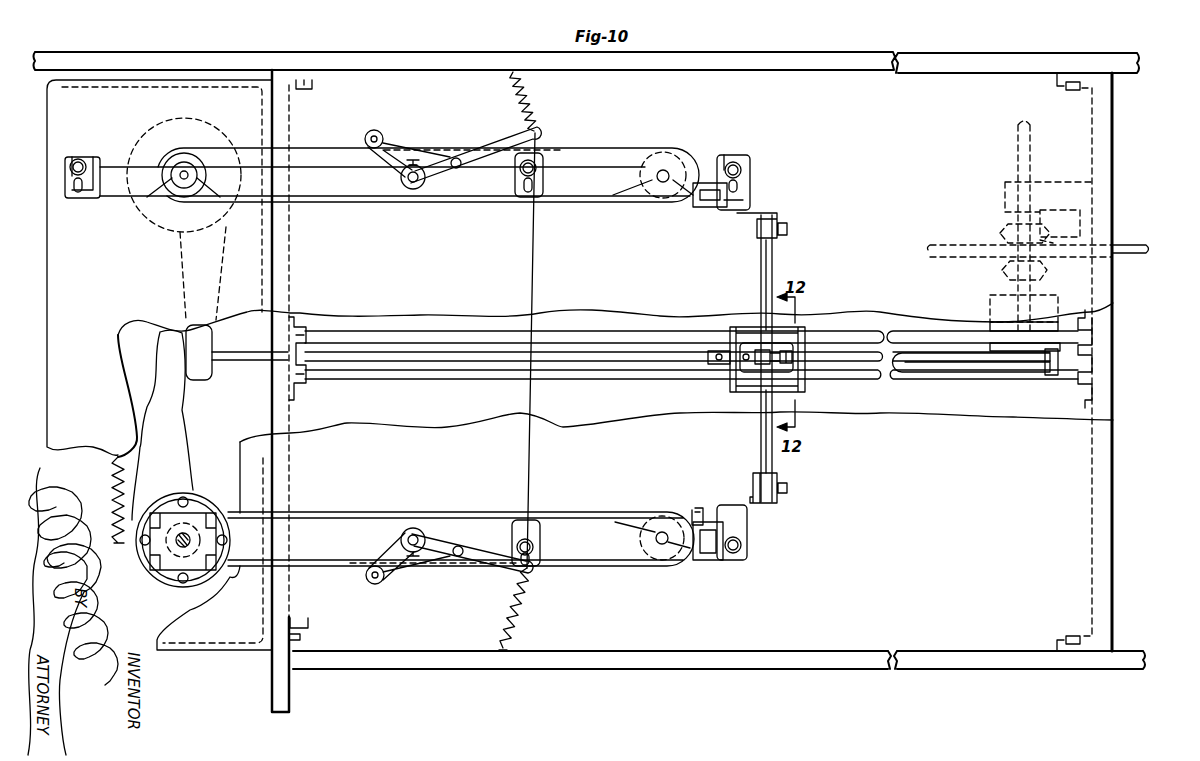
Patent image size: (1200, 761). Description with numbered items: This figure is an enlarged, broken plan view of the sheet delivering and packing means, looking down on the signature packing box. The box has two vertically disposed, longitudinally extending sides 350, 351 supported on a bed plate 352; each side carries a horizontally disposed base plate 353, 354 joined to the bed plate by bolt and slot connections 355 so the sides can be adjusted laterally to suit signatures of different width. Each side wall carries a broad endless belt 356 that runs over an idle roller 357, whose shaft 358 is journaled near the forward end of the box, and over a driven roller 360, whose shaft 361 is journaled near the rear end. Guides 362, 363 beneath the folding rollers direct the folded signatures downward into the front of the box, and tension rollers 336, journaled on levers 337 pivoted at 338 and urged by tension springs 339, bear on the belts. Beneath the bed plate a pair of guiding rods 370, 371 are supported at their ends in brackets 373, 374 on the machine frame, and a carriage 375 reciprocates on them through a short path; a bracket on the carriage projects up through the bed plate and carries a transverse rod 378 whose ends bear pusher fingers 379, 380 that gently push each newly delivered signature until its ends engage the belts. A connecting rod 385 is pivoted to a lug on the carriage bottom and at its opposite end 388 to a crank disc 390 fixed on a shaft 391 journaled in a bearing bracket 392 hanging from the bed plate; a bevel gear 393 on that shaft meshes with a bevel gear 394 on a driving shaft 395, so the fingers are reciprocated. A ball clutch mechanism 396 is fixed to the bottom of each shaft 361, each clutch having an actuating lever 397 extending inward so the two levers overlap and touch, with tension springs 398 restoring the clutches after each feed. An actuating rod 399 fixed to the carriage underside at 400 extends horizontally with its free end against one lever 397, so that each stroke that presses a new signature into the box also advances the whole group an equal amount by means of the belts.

The tension roller 336 is at (384, 136).
The lever 337 is at (392, 144).
The pivot 338 is at (406, 188).
The tension spring 339 is at (528, 104).
The side 350 is at (568, 195).
The side 351 is at (575, 520).
The bed plate 352 is at (775, 95).
The base plate 353 is at (340, 167).
The base plate 354 is at (75, 198).
The bolt and slot connection 355 is at (68, 165).
The endless belt 356 is at (472, 199).
The idle roller 357 is at (676, 155).
The shaft 358 is at (658, 168).
The driven roller 360 is at (178, 148).
The shaft 361 is at (186, 168).
The guide 362 is at (700, 208).
The guide 363 is at (698, 508).
The guiding rod 370 is at (850, 330).
The guiding rod 371 is at (850, 376).
The bracket 373 is at (298, 324).
The bracket 374 is at (1078, 385).
The carriage 375 is at (745, 382).
The rod 378 is at (774, 259).
The pusher finger 379 is at (750, 214).
The pusher finger 380 is at (752, 504).
The connecting rod 385 is at (934, 362).
The end of connecting rod 388 is at (1048, 366).
The crank disc 390 is at (995, 345).
The shaft 391 is at (1022, 291).
The bearing bracket 392 is at (992, 325).
The bevel gear 393 is at (1050, 278).
The bevel gear 394 is at (1053, 243).
The driving shaft 395 is at (1125, 246).
The ball clutch mechanism 396 is at (158, 583).
The actuating lever 397 is at (205, 368).
The tension spring 398 is at (112, 462).
The actuating rod 399 is at (452, 360).
The fixing point 400 is at (716, 352).